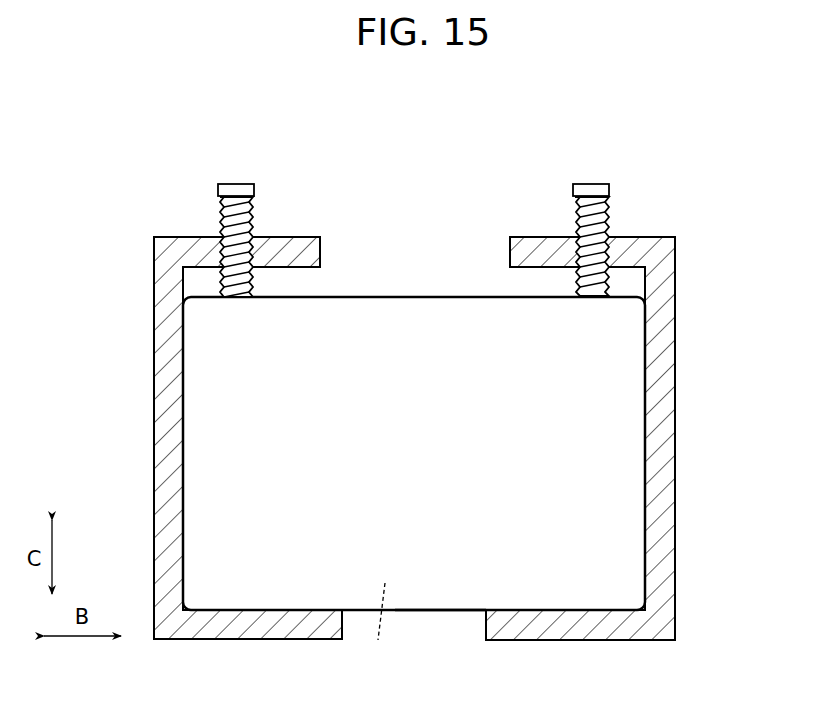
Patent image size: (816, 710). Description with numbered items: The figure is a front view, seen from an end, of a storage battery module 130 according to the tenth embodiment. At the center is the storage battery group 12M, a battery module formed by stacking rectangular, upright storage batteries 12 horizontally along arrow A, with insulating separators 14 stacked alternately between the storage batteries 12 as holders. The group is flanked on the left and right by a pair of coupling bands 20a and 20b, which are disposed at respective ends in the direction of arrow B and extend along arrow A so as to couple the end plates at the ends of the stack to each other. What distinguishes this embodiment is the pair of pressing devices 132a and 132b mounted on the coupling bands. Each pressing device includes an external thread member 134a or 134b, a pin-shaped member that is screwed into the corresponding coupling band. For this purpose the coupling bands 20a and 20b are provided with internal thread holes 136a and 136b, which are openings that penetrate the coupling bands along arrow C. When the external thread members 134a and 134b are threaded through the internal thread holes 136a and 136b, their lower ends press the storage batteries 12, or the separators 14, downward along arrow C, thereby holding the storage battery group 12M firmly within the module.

The storage battery module 130 is at (513, 94).
The coupling band 20a is at (139, 382).
The coupling band 20b is at (688, 383).
The storage battery 12 is at (433, 602).
The storage battery group 12M is at (458, 613).
The insulating separator 14 is at (380, 627).
The pressing device 132a is at (282, 236).
The pressing device 132b is at (635, 236).
The external thread member 134a is at (237, 193).
The external thread member 134b is at (593, 190).
The internal thread hole 136a is at (226, 254).
The internal thread hole 136b is at (582, 257).